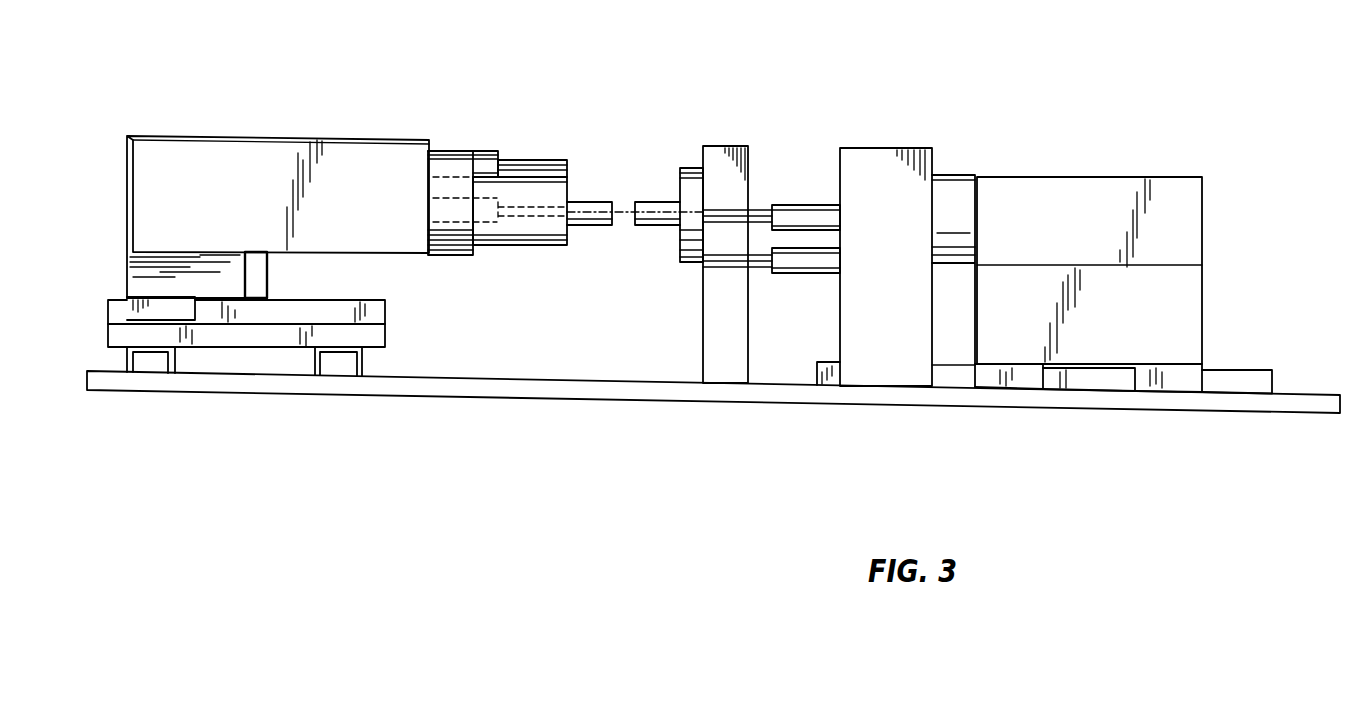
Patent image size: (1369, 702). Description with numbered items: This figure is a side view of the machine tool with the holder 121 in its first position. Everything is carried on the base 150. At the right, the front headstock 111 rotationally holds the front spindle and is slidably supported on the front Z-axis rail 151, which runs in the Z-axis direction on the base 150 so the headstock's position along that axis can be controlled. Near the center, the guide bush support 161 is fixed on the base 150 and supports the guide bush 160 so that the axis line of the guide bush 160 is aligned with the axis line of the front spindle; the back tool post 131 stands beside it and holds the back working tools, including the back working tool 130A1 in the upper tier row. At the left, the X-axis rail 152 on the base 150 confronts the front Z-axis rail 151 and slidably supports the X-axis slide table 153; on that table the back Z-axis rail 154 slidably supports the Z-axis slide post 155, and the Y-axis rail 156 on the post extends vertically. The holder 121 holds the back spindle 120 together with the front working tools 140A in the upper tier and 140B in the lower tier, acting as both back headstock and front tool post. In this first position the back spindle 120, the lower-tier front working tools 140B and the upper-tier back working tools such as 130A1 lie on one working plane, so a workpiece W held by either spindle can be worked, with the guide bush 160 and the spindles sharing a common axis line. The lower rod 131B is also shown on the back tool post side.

The front headstock 111 is at (1090, 188).
The back spindle 120 is at (520, 273).
The holder 121 is at (230, 157).
The back working tool 130A1 is at (738, 208).
The back tool post 131 is at (876, 168).
The lower guide rod 131B is at (722, 262).
The front working tools 140A is at (550, 160).
The front working tools 140B is at (515, 207).
The base 150 is at (1302, 400).
The front Z-axis rail 151 is at (1240, 378).
The X-axis rail 152 is at (148, 367).
The X-axis slide table 153 is at (374, 338).
The back Z-axis rail 154 is at (376, 316).
The Z-axis slide post 155 is at (133, 258).
The Y-axis rail 156 is at (257, 280).
The guide bush 160 is at (695, 188).
The guide bush support 161 is at (715, 155).
The workpiece W is at (652, 207).